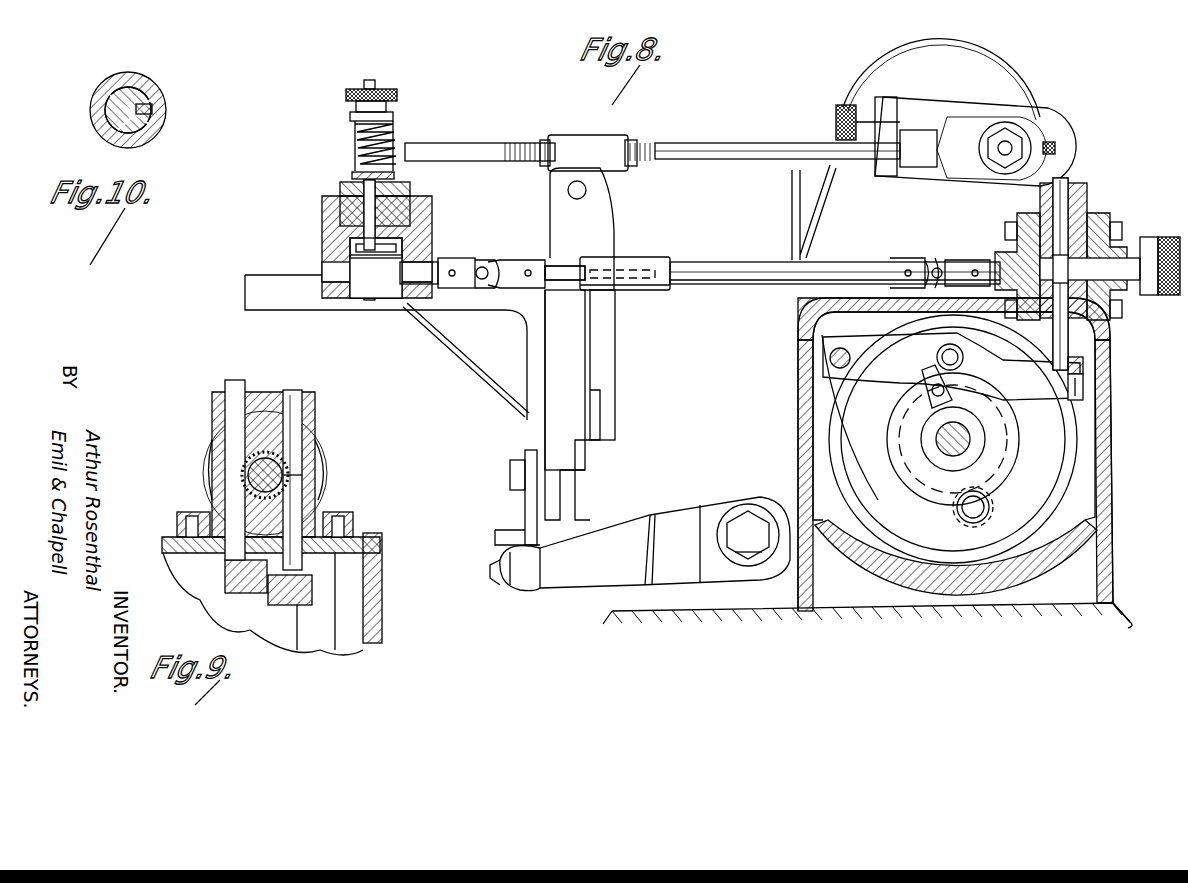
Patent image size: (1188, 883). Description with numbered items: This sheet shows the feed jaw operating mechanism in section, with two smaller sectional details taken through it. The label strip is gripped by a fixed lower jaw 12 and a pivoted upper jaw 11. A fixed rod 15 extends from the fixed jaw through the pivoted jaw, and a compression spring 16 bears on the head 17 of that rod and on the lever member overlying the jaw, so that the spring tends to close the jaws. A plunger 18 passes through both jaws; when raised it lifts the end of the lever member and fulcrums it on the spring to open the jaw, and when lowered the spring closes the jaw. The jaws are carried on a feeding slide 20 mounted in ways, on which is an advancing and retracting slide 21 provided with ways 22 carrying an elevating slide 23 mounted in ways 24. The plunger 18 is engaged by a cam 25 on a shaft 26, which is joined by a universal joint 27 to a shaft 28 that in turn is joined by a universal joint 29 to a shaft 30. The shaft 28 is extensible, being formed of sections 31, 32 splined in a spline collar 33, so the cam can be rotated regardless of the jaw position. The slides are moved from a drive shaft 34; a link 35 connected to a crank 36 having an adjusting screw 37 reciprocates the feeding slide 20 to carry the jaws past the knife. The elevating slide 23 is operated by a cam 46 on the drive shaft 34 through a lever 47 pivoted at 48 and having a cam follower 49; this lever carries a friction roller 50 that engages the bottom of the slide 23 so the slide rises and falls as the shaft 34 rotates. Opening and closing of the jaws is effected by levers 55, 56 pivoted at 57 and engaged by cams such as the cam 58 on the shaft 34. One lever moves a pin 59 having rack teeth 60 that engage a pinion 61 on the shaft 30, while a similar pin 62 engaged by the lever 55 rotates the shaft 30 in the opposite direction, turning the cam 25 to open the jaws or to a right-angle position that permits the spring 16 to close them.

In FIG. 8, the upper jaw 11 is at (342, 183).
In FIG. 8, the fixed lower jaw 12 is at (324, 228).
In FIG. 8, the fixed rod 15 is at (376, 82).
In FIG. 8, the compression spring 16 is at (395, 128).
In FIG. 8, the head 17 is at (398, 95).
In FIG. 8, the plunger 18 is at (368, 203).
In FIG. 8, the feeding slide 20 is at (600, 225).
In FIG. 8, the advancing and retracting slide 21 is at (560, 385).
In FIG. 8, the ways 22 is at (590, 410).
In FIG. 8, the elevating slide 23 is at (530, 360).
In FIG. 8, the ways 24 is at (557, 498).
In FIG. 8, the cam 25 is at (388, 270).
In FIG. 8, the shaft 26 is at (425, 270).
In FIG. 8, the universal joint 27 is at (500, 290).
In FIG. 8, the shaft 28 is at (718, 268).
In FIG. 8, the universal joint 29 is at (957, 262).
In FIG. 9, the shaft 30 is at (285, 476).
In FIG. 8, the shaft 30 is at (1125, 268).
In FIG. 10, the section 31 is at (132, 108).
In FIG. 8, the section 31 is at (545, 275).
In FIG. 10, the section 32 is at (150, 108).
In FIG. 8, the section 32 is at (685, 290).
In FIG. 10, the spline collar 33 is at (122, 78).
In FIG. 8, the spline collar 33 is at (652, 265).
In FIG. 8, the drive shaft 34 is at (965, 440).
In FIG. 8, the link 35 is at (703, 150).
In FIG. 8, the crank 36 is at (1052, 112).
In FIG. 8, the adjusting screw 37 is at (1055, 145).
In FIG. 8, the cam 46 is at (925, 485).
In FIG. 8, the lever 47 is at (868, 470).
In FIG. 8, the pivot 48 is at (750, 538).
In FIG. 8, the cam follower 49 is at (972, 510).
In FIG. 8, the friction roller 50 is at (522, 580).
In FIG. 9, the lever 55 is at (312, 596).
In FIG. 8, the lever 55 is at (1083, 397).
In FIG. 9, the lever 56 is at (240, 585).
In FIG. 8, the lever 56 is at (1083, 362).
In FIG. 8, the pivot 57 is at (850, 358).
In FIG. 8, the cam 58 is at (922, 380).
In FIG. 9, the pin 59 is at (235, 380).
In FIG. 8, the pin 59 is at (1068, 178).
In FIG. 9, the rack teeth 60 is at (243, 455).
In FIG. 9, the pinion 61 is at (248, 478).
In FIG. 8, the pinion 61 is at (1075, 250).
In FIG. 9, the pin 62 is at (296, 418).
In FIG. 8, the pin 62 is at (1062, 210).